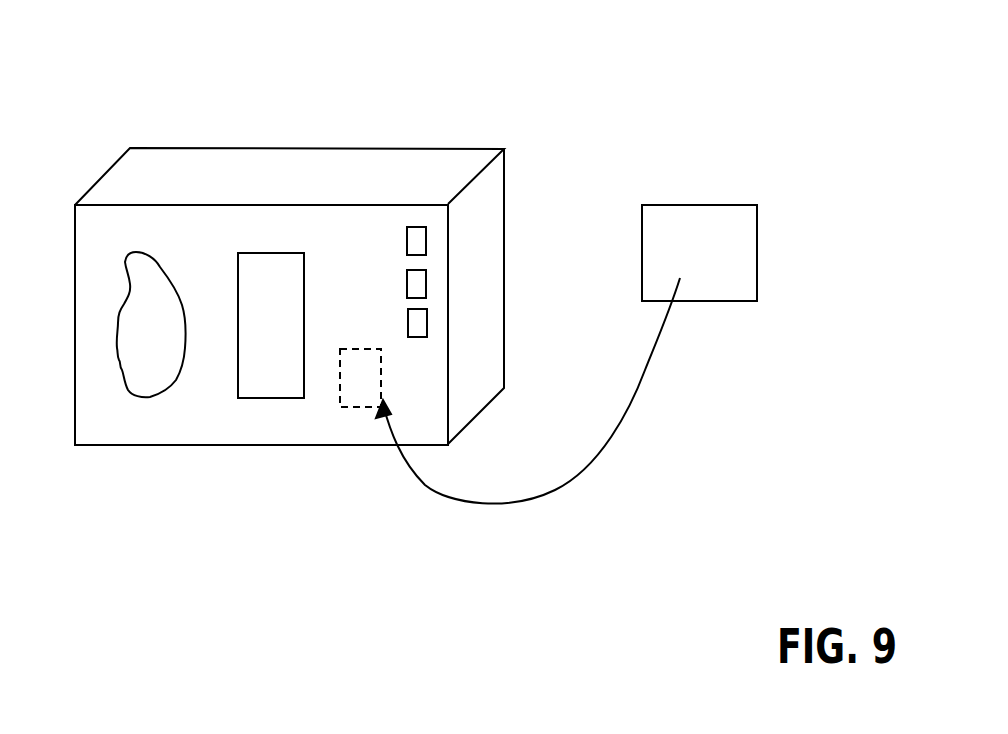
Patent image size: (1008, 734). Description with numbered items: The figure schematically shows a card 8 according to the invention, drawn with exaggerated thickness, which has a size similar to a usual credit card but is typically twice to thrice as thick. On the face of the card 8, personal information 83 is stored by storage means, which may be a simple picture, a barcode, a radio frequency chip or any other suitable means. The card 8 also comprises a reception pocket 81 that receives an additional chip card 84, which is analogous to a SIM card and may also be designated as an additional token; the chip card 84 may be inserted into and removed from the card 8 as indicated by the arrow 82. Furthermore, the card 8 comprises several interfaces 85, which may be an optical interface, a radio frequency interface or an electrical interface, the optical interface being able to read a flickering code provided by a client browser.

The card 8 is at (277, 171).
The receiving interface 81 is at (352, 392).
The arrow 82 is at (540, 500).
The personal information 83 is at (263, 382).
The additional chip card 84 is at (703, 222).
The interfaces 85 is at (412, 240).